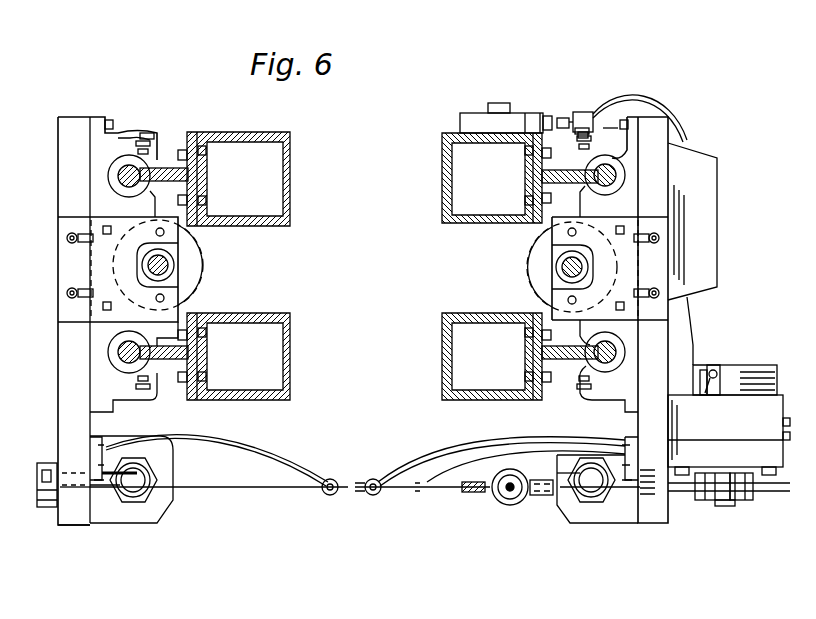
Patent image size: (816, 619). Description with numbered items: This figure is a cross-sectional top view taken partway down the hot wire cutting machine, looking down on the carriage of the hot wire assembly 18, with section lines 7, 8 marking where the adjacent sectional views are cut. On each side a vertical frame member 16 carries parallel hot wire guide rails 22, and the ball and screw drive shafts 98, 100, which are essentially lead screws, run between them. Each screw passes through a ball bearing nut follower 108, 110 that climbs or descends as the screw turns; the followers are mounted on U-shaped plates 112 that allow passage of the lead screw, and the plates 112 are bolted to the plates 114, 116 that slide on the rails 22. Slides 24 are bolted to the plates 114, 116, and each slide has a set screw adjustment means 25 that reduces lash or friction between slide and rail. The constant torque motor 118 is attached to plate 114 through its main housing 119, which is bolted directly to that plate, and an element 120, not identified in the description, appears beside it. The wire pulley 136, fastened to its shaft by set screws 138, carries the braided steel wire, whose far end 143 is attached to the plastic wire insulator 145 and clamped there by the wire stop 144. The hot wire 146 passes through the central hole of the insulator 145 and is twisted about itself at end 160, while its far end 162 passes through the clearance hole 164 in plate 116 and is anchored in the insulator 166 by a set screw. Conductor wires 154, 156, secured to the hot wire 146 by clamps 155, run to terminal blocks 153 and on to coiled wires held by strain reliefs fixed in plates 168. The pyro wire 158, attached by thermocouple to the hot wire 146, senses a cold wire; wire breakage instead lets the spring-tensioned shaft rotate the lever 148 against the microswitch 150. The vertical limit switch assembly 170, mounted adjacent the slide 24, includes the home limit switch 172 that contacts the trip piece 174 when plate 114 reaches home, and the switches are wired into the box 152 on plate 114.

The section line 7- 7 is at (492, 90).
The section line 8- 8 is at (793, 340).
The vertical frame member 16 is at (293, 165).
The hot wire assembly 18 is at (676, 540).
The hot wire guide rail 22 is at (163, 162).
The slide 24 is at (118, 138).
The set screw adjustment means 25 is at (151, 122).
The ball and screw drive shaft 98 is at (562, 264).
The ball and screw drive shaft 100 is at (168, 262).
The ball bearing nut follower 108 is at (530, 268).
The ball bearing nut follower 110 is at (196, 271).
The plate 112 is at (62, 253).
The plate 114 is at (653, 523).
The plate 116 is at (68, 530).
The constant torque motor 118 is at (740, 405).
The main housing 119 is at (782, 392).
The drive shaft 120 is at (790, 492).
The wire pulley 136 is at (738, 500).
The set screw 138 is at (710, 500).
The far end of braided wire 143 is at (566, 524).
The wire stop 144 is at (541, 496).
The wire insulator 145 is at (508, 505).
The hot wire 146 is at (330, 495).
The shaft lever 148 is at (752, 365).
The microswitch 150 is at (696, 338).
The box 152 is at (712, 175).
The terminal block 153 is at (100, 440).
The conductor wire 154 is at (430, 462).
The clamp 155 is at (326, 480).
The conductor wire 156 is at (255, 455).
The pyro wire 158 is at (445, 487).
The end of hot wire 160 is at (478, 496).
The far end of hot wire 162 is at (105, 500).
The clearance hole 164 is at (73, 462).
The insulator 166 is at (45, 508).
The plate 168 is at (160, 508).
The vertical limit switch assembly 170 is at (548, 100).
The home limit switch 172 is at (578, 112).
The trip piece 174 is at (520, 113).